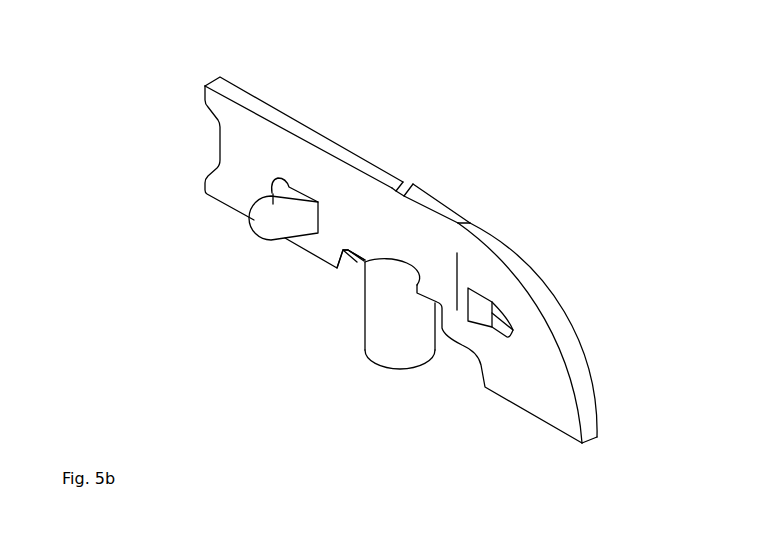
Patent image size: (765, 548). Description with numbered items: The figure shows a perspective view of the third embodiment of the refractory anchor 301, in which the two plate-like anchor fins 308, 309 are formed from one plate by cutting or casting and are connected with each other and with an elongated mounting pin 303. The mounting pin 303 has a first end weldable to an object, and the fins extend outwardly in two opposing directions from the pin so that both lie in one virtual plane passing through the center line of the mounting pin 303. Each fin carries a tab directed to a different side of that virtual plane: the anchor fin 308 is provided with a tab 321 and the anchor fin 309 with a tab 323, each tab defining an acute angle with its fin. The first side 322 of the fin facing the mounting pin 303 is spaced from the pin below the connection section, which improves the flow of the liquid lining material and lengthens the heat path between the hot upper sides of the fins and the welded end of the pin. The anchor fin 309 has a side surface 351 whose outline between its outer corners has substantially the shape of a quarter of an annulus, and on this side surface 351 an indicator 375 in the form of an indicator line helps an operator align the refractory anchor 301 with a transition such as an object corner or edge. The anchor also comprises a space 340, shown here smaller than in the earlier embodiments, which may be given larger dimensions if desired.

The refractory anchor 301 is at (480, 134).
The anchor fin 308 is at (273, 150).
The space 340 is at (404, 175).
The indicator 375 is at (458, 269).
The anchor fin 309 is at (527, 353).
The side surface 351 is at (530, 370).
The tab 321 is at (275, 228).
The first side 322 is at (345, 254).
The elongated mounting pin 303 is at (390, 330).
The tab 323 is at (498, 316).